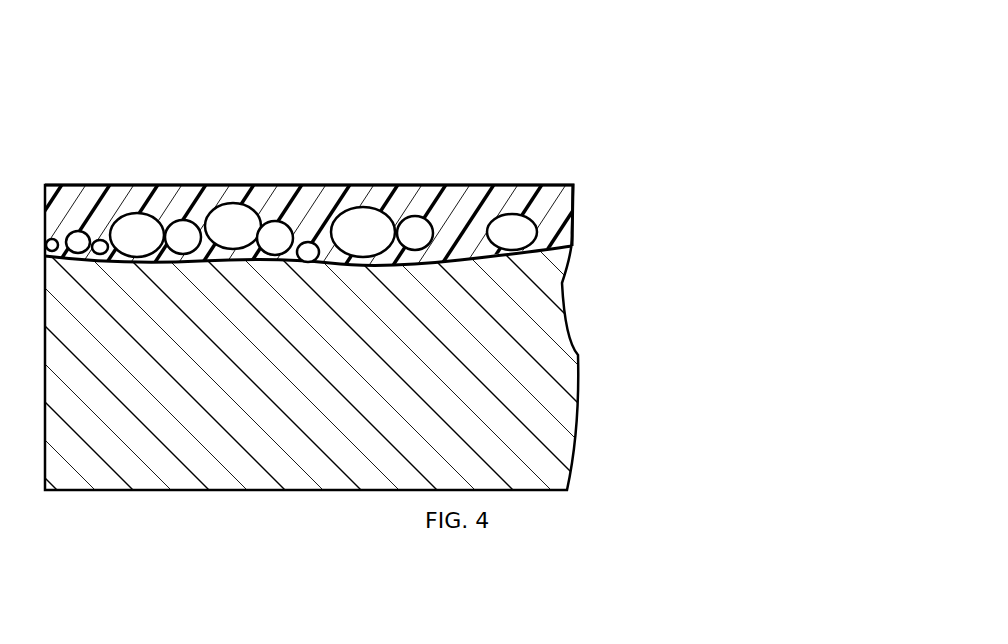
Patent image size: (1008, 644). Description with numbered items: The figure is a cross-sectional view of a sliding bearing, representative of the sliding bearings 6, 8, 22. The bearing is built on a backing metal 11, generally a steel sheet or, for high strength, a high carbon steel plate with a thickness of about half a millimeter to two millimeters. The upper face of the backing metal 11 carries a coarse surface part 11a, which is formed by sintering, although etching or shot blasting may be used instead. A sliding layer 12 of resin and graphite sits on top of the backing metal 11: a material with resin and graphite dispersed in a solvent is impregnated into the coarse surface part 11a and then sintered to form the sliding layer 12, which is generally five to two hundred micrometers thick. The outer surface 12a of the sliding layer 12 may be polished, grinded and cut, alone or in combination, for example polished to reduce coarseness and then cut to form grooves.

The sliding bearing 6 is at (585, 153).
The sliding bearing 8 is at (432, 281).
The sliding bearing 22 is at (432, 281).
The backing metal 11 is at (552, 387).
The coarse surface part 11a is at (520, 233).
The sliding layer 12 is at (453, 185).
The surface of the sliding layer 12a is at (252, 185).